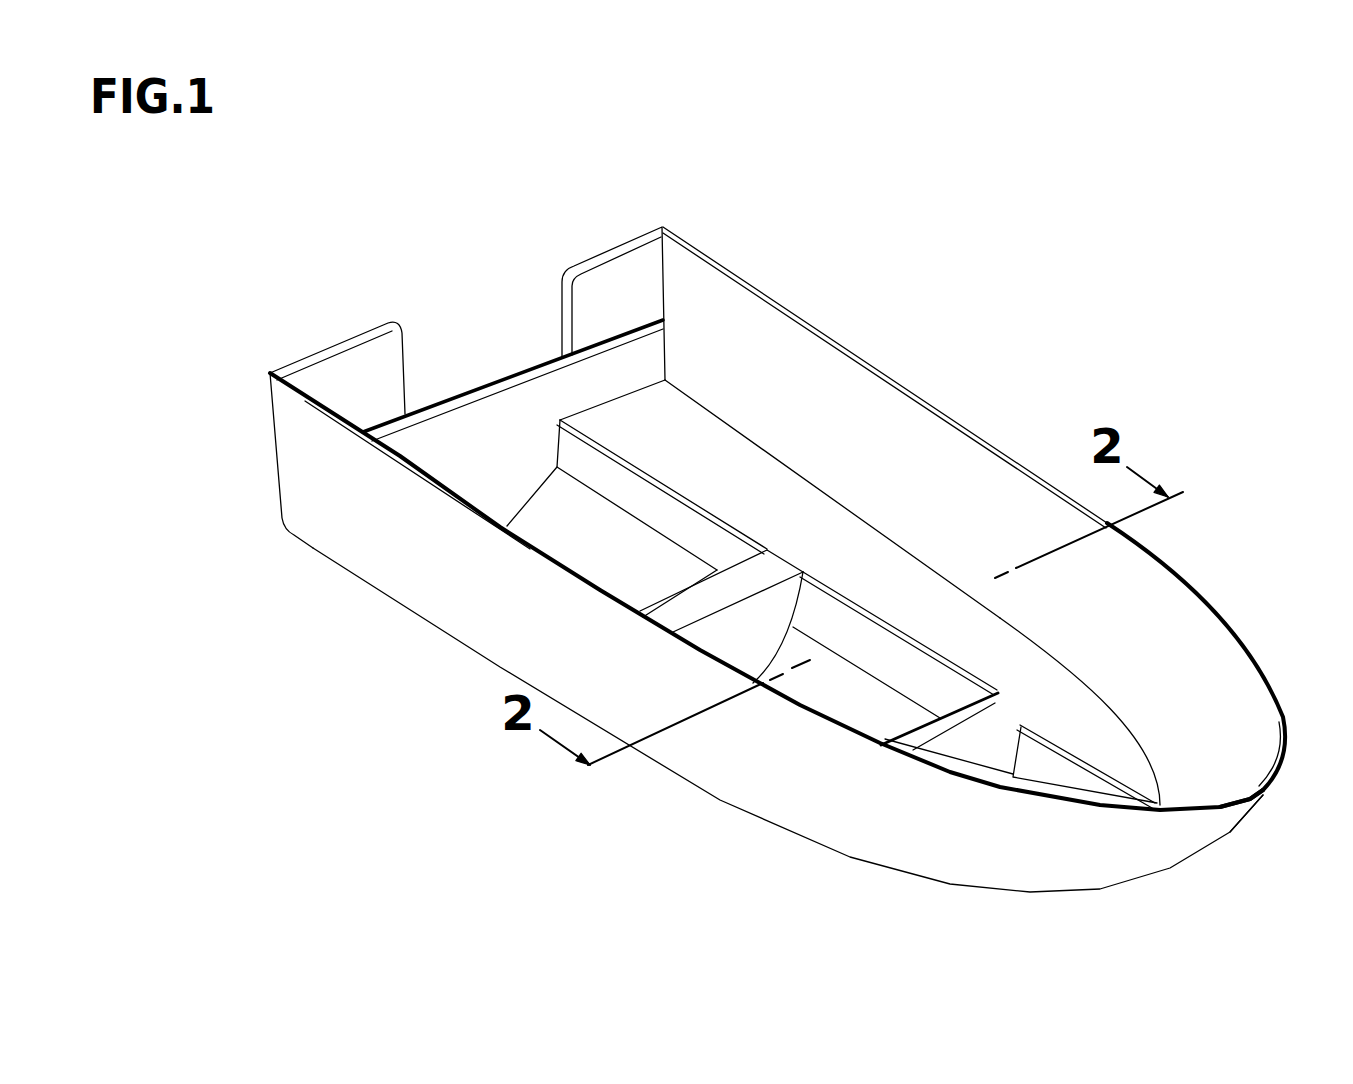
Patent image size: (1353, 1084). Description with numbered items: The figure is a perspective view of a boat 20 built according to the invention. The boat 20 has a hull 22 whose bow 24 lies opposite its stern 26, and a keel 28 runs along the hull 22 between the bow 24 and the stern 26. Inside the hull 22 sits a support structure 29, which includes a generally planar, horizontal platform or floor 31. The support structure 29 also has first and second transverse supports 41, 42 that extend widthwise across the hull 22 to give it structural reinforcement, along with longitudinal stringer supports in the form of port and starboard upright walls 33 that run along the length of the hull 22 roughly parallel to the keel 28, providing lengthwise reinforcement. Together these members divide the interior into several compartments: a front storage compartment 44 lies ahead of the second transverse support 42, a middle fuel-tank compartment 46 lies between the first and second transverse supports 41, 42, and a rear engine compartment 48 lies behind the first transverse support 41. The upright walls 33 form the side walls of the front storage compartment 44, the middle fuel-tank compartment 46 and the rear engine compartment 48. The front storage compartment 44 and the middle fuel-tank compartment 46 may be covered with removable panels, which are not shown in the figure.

The boat 20 is at (993, 400).
The hull 22 is at (1177, 563).
The bow 24 is at (1258, 799).
The stern 26 is at (570, 263).
The keel 28 is at (1100, 889).
The support structure 29 is at (727, 470).
The floor 31 is at (912, 597).
The upright walls 33 is at (593, 467).
The first transverse support 41 is at (703, 627).
The second transverse support 42 is at (995, 765).
The front storage compartment 44 is at (1075, 773).
The middle fuel-tank compartment 46 is at (795, 657).
The rear engine compartment 48 is at (551, 514).